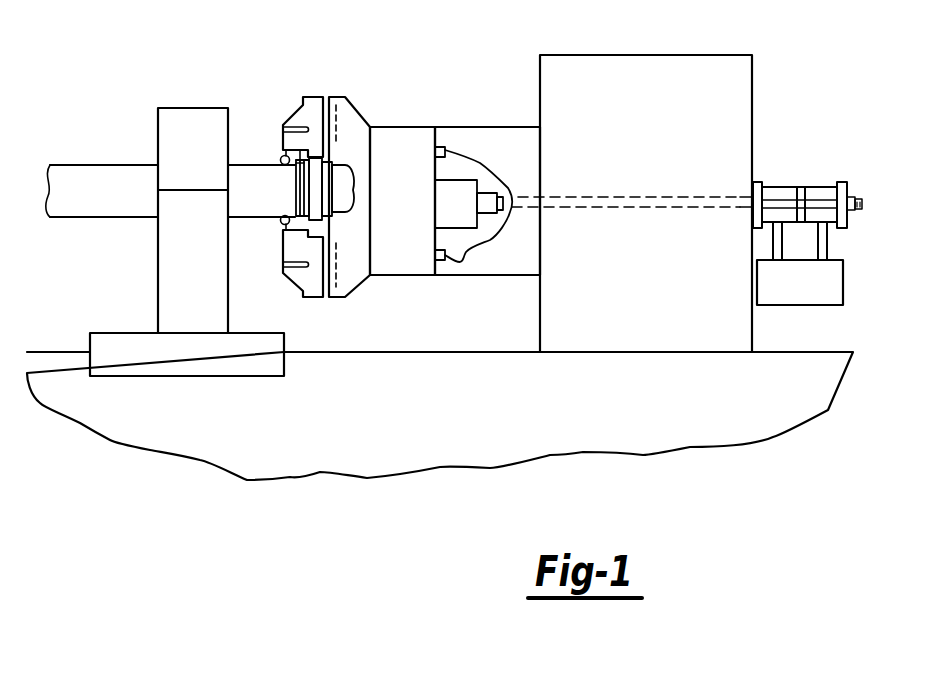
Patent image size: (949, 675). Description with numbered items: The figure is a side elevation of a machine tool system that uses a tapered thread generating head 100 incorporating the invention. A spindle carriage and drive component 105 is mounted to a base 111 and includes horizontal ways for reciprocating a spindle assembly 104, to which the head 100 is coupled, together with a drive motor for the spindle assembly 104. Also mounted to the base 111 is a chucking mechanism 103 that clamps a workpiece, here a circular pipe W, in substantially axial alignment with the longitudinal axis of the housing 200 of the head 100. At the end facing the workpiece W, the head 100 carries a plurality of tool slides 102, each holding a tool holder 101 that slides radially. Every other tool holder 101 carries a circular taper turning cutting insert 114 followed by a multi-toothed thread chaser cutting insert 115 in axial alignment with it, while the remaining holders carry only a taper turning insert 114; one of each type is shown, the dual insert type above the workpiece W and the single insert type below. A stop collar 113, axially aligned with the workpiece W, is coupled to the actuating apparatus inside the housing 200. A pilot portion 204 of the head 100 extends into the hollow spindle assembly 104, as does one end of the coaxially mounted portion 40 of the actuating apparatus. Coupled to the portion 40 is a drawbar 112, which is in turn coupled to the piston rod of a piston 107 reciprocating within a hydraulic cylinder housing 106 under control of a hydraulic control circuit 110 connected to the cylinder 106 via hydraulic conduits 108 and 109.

The workpiece W is at (88, 170).
The tapered thread generating head 100 is at (304, 165).
The tool holder 101 is at (287, 146).
The tool slide 102 is at (332, 97).
The chucking mechanism 103 is at (195, 113).
The spindle assembly 104 is at (457, 133).
The spindle carriage and drive component 105 is at (683, 55).
The hydraulic cylinder housing 106 is at (802, 187).
The piston 107 is at (808, 193).
The hydraulic conduit 108 is at (772, 240).
The hydraulic conduit 109 is at (827, 243).
The hydraulic control circuit 110 is at (843, 283).
The base 111 is at (492, 412).
The drawbar 112 is at (597, 197).
The stop collar 113 is at (342, 153).
The taper turning cutting insert 114 is at (285, 164).
The thread chaser cutting insert 115 is at (297, 162).
The housing 200 is at (350, 108).
The pilot portion 204 is at (447, 151).
The coaxially mounted portion of the actuating apparatus 40 is at (467, 258).